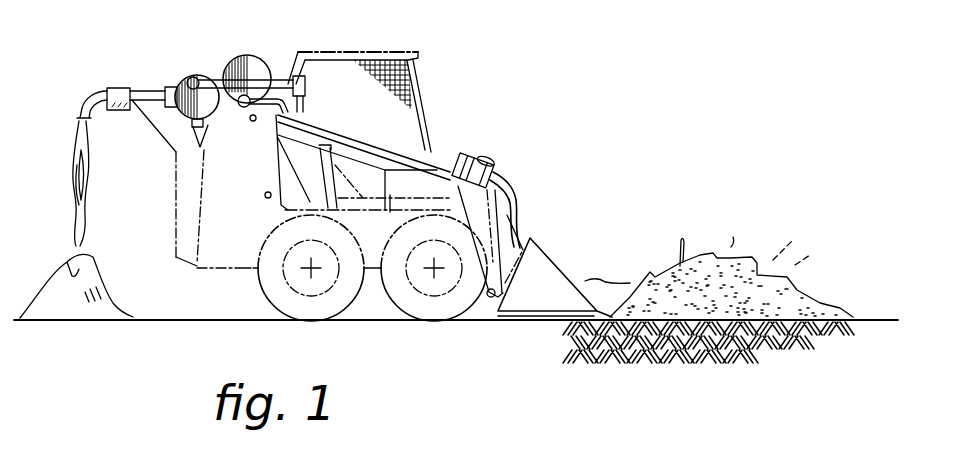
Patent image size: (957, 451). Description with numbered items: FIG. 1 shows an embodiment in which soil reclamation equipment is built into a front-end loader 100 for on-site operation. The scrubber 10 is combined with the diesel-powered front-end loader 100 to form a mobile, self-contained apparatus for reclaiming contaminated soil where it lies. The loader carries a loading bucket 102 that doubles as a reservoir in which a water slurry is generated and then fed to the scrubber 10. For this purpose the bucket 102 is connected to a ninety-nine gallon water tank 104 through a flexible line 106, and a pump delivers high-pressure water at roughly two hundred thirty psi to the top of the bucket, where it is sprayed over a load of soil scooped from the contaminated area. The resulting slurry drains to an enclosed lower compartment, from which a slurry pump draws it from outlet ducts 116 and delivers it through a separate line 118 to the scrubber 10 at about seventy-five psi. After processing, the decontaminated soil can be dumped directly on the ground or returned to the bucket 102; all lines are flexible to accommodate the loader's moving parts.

The scrubber 10 is at (182, 67).
The front-end loader 100 is at (413, 82).
The loading bucket 102 is at (555, 258).
The water tank 104 is at (258, 57).
The flexible line 106 is at (517, 227).
The outlet ducts 116 is at (494, 314).
The separate line 118 is at (512, 217).